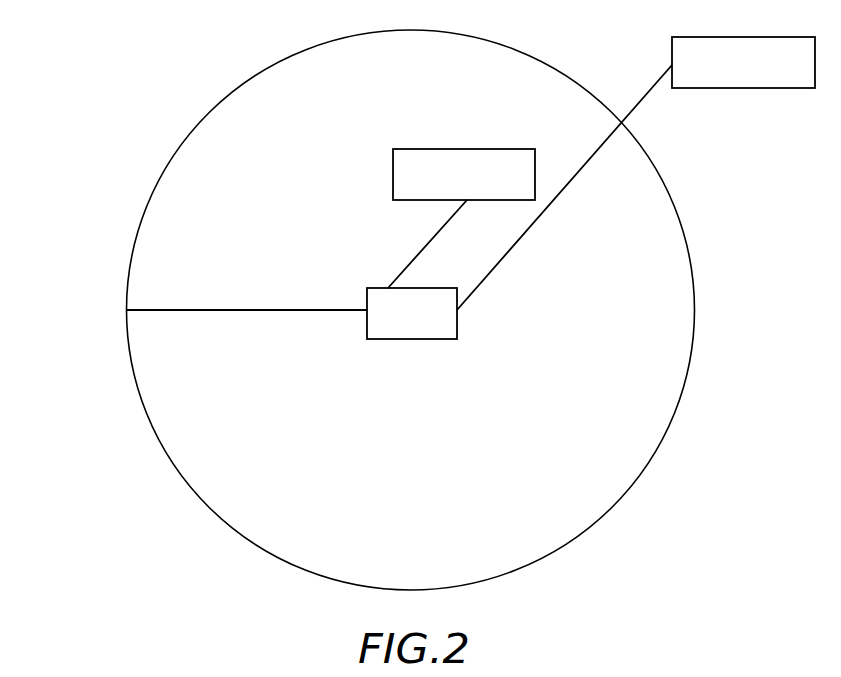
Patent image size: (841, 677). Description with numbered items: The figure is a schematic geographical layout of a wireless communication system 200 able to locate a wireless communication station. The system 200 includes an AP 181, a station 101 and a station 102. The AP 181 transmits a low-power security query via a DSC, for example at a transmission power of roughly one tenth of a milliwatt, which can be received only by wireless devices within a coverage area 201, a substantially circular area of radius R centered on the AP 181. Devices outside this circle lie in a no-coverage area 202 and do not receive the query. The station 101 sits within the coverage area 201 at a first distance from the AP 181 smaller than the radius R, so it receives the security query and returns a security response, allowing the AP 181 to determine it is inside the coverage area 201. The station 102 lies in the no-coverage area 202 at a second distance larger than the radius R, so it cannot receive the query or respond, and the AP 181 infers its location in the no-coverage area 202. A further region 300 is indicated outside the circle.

The wireless communication system 200 is at (140, 83).
The station 101 is at (466, 149).
The station 102 is at (743, 37).
The AP 181 is at (410, 339).
The coverage area 201 is at (532, 470).
The no-coverage area 202 is at (708, 372).
The region outside coverage area 300 is at (665, 675).